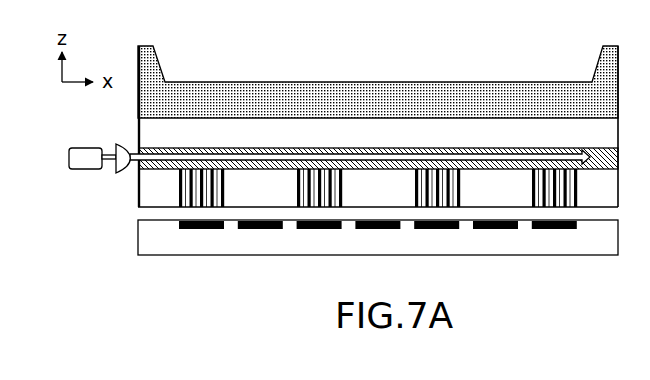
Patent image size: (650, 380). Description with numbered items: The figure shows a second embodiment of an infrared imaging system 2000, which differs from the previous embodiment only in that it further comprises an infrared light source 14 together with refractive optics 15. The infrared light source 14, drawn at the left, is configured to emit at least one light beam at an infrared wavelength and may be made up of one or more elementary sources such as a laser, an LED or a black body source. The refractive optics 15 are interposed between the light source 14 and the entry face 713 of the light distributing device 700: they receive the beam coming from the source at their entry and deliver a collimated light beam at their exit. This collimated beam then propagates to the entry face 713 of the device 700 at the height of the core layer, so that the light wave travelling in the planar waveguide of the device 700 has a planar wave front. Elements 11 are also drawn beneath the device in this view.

The infrared imaging system 2000 is at (189, 56).
The light distributing device 700 is at (475, 72).
The entry face 713 is at (138, 131).
The infrared light source 14 is at (85, 170).
The refractive optics 15 is at (124, 171).
The heaters 11 is at (258, 226).